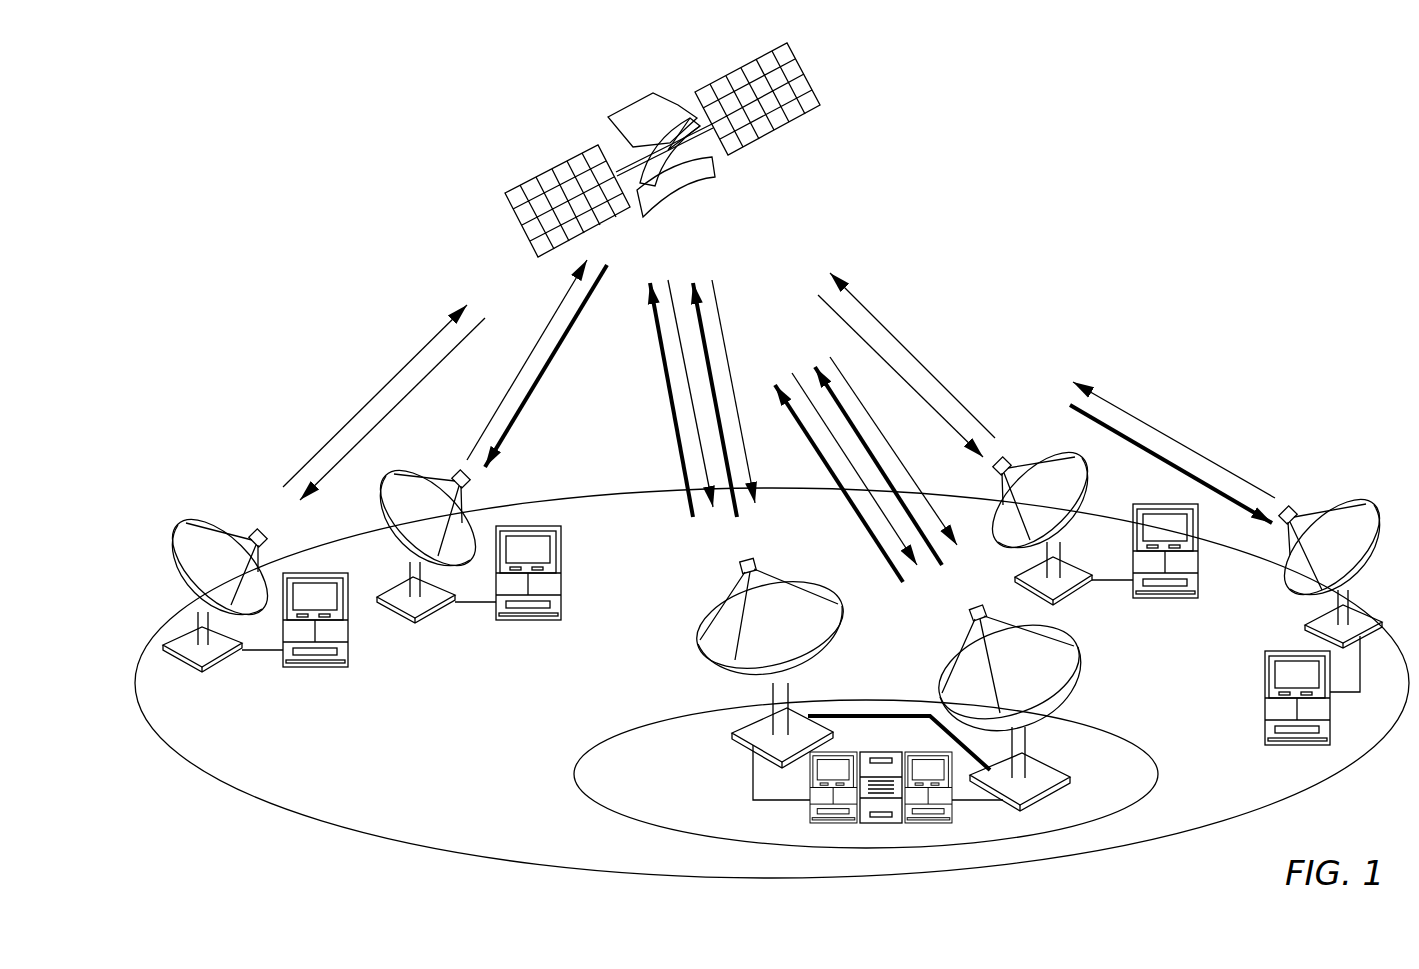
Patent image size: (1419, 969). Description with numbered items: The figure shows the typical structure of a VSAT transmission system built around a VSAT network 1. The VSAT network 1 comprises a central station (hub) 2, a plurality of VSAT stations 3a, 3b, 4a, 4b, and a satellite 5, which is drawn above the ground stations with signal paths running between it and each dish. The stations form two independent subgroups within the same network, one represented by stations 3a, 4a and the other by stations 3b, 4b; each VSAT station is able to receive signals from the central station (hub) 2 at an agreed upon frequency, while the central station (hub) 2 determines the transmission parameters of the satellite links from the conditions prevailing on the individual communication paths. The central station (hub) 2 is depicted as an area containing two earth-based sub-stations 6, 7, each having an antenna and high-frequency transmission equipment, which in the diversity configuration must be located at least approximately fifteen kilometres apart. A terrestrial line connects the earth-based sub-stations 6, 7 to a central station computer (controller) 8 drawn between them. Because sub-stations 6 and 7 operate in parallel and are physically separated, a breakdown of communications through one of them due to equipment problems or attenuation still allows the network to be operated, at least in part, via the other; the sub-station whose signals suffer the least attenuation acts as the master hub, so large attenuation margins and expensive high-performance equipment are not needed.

The VSAT network 1 is at (367, 829).
The central station (hub) 2 is at (593, 807).
The VSAT station 3a is at (312, 667).
The VSAT station 3b is at (1170, 598).
The VSAT station 4a is at (525, 620).
The VSAT station 4b is at (1270, 746).
The satellite 5 is at (707, 178).
The earth-based sub-station 6 is at (732, 737).
The earth-based sub-station 7 is at (1063, 770).
The central station computer (controller) 8 is at (810, 813).